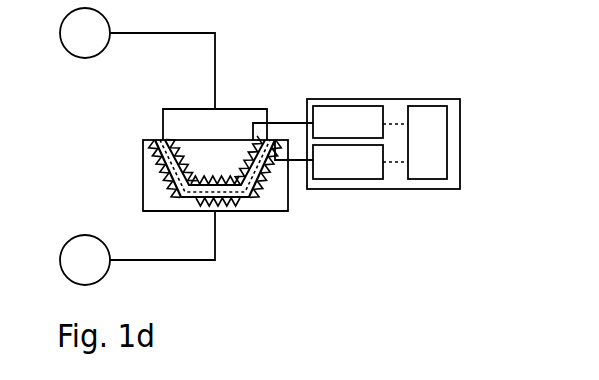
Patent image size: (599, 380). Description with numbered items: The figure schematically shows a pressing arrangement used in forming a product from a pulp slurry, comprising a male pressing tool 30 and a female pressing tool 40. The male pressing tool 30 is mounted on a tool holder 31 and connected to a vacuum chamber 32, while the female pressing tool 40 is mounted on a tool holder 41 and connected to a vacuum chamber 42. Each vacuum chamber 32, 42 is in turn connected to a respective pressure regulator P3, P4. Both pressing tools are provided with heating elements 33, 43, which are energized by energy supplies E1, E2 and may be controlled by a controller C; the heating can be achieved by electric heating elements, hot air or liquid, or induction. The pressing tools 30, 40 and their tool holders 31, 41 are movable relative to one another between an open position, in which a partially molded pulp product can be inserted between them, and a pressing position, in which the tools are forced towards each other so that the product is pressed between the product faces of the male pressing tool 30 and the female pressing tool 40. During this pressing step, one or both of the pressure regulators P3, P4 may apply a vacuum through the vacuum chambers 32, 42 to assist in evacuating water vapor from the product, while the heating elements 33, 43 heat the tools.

The pressure regulator P3 is at (137, 58).
The pressure regulator P4 is at (137, 248).
The male pressing tool 30 is at (159, 141).
The tool holder 31 is at (227, 109).
The vacuum chamber 32 is at (222, 145).
The heating element 33 is at (188, 152).
The female pressing tool 40 is at (150, 152).
The tool holder 41 is at (268, 212).
The vacuum chamber 42 is at (275, 200).
The heating element 43 is at (157, 180).
The energy supply E1 is at (330, 123).
The energy supply E2 is at (341, 159).
The controller C is at (427, 142).